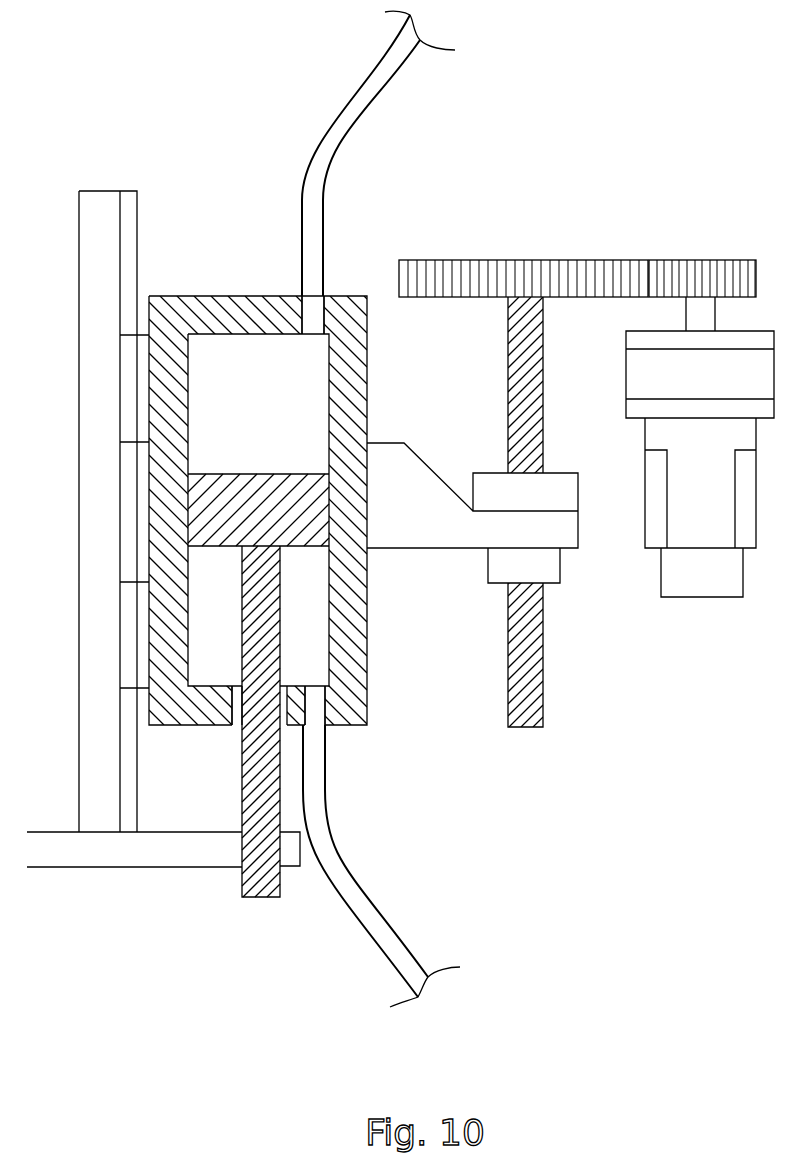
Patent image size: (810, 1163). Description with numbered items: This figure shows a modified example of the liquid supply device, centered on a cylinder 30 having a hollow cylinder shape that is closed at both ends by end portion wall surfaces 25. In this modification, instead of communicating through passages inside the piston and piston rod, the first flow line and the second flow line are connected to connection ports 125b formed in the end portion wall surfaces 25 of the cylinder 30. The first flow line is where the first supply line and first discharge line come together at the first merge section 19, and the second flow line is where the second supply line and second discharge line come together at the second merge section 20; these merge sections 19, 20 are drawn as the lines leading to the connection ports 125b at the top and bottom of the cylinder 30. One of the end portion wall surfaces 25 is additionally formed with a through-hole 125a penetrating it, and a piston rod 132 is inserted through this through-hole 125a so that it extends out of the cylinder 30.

The first merge section 19 is at (347, 123).
The second merge section 20 is at (380, 922).
The end portion wall surface 25 is at (213, 308).
The cylinder 30 is at (360, 632).
The through-hole 125a is at (238, 717).
The connection port 125b is at (312, 296).
The piston rod 132 is at (267, 878).